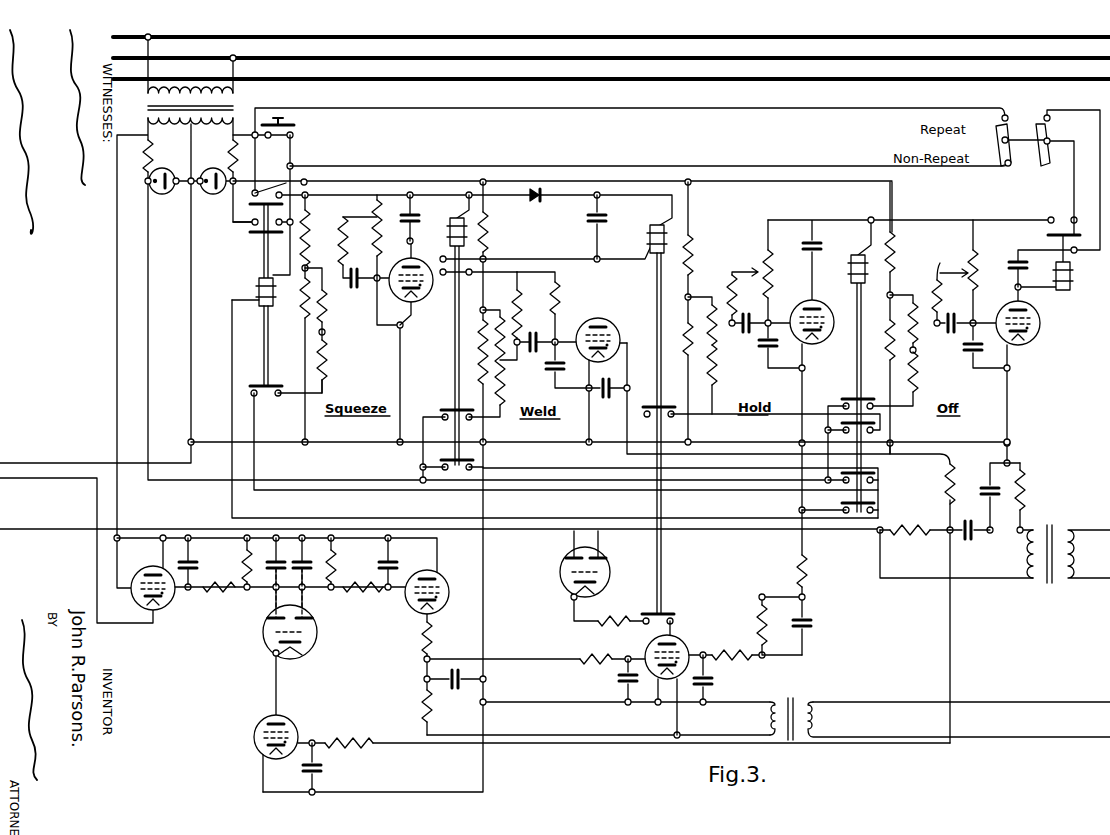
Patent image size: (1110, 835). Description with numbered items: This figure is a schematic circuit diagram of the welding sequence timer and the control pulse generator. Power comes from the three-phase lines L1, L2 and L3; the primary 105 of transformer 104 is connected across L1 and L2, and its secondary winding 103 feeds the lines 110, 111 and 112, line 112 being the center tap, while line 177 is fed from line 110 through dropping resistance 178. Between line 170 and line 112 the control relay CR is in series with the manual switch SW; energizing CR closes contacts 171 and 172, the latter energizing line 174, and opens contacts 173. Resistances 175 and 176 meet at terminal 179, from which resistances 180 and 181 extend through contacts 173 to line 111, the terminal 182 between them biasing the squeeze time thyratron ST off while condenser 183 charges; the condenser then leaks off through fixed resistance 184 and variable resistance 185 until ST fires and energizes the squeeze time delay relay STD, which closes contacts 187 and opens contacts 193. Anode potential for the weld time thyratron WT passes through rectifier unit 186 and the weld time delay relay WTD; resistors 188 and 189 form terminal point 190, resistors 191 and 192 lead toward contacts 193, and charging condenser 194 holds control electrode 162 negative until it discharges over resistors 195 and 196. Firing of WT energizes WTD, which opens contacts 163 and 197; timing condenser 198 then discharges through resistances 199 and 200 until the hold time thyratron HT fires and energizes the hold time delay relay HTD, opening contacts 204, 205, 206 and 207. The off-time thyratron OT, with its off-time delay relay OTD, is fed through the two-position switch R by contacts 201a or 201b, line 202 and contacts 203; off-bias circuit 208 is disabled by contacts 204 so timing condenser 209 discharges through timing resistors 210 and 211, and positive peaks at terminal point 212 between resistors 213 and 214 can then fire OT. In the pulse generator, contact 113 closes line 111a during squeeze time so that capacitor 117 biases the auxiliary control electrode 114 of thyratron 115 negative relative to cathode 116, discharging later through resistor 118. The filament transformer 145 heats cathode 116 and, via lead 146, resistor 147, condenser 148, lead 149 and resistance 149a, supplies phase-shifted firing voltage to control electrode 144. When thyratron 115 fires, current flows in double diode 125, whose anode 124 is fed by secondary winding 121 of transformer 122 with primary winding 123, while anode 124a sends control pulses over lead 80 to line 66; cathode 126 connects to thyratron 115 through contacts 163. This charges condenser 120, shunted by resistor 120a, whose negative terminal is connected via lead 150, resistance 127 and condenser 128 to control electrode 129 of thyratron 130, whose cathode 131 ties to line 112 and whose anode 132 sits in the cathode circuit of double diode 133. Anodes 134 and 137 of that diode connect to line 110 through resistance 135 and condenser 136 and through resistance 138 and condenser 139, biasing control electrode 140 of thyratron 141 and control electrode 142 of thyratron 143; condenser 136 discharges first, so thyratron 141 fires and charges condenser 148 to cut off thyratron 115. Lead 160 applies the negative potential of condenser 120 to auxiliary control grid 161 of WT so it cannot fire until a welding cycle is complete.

The power line L1 is at (135, 36).
The power line L2 is at (141, 57).
The power line L3 is at (141, 78).
The transformer 104 is at (272, 101).
The primary 105 is at (148, 94).
The secondary winding 103 is at (148, 120).
The dropping resistance 178 is at (230, 152).
The line 110 is at (337, 114).
The manually operable switch SW is at (328, 137).
The line 174 is at (768, 168).
The normally open contacts 171 is at (288, 183).
The line 170 is at (562, 188).
The normally open contacts 172 is at (262, 244).
The control relay CR is at (250, 286).
The normally closed contacts 173 is at (292, 374).
The resistance 175 is at (304, 221).
The fixed resistance 184 is at (326, 233).
The terminal 179 is at (320, 345).
The resistance 176 is at (302, 318).
The resistance 180 is at (338, 322).
The terminal 182 is at (329, 338).
The resistance 181 is at (329, 364).
The condenser 183 is at (363, 252).
The variable resistance 185 is at (377, 318).
The squeeze time thyratron ST is at (447, 326).
The normally open contacts 187 is at (426, 292).
The squeeze time delay relay STD is at (462, 218).
The normally closed contacts 193 is at (440, 410).
The normally closed contact 113 is at (480, 465).
The line 111 is at (398, 478).
The line 111a is at (586, 470).
The resistor 188 is at (486, 232).
The rectifier unit 186 is at (548, 205).
The weld time delay relay WTD is at (645, 217).
The normally closed contacts 197 is at (645, 416).
The resistance 199 is at (703, 312).
The line 177 is at (734, 182).
The variable resistance 200 is at (765, 279).
The timing condenser 198 is at (766, 341).
The hold time delay relay HTD is at (866, 244).
The hold time thyratron HT is at (821, 400).
The resistor 214 is at (892, 270).
The resistor 213 is at (885, 336).
The terminal point 212 is at (908, 315).
The off-bias circuit 208 is at (975, 392).
The normally closed contacts 204 is at (844, 398).
The normally closed contacts 205 is at (881, 427).
The normally closed contacts 206 is at (872, 482).
The normally closed contacts 207 is at (872, 507).
The timing resistor 211 is at (975, 282).
The timing resistor 210 is at (964, 290).
The timing condenser 209 is at (958, 355).
The off-time thyratron OT is at (1026, 375).
The off-time delay relay OTD is at (1100, 320).
The normally closed contacts 203 is at (1040, 239).
The line 202 is at (1073, 199).
The manual two-position switch R is at (1028, 156).
The contacts 201a is at (1025, 109).
The contacts 201b is at (1010, 164).
The line 112 is at (191, 432).
The resistor 189 is at (460, 370).
The resistor 191 is at (472, 334).
The resistor 192 is at (504, 382).
The charging condenser 194 is at (525, 316).
The resistor 196 is at (558, 289).
The resistor 195 is at (545, 313).
The terminal point 190 is at (484, 307).
The weld time thyratron WT is at (582, 326).
The auxiliary control grid 161 is at (616, 334).
The control electrode 162 is at (602, 369).
The lead 160 is at (933, 603).
The condenser 120 is at (976, 478).
The resistor 120a is at (1025, 496).
The lead 80 is at (24, 528).
The line 66 is at (26, 463).
The resistance 127 is at (910, 537).
The condenser 128 is at (970, 537).
The transformer 122 is at (1060, 600).
The secondary winding 121 is at (1014, 554).
The primary winding 123 is at (1089, 554).
The lead 150 is at (955, 616).
The thyratron 143 is at (138, 600).
The control electrode 142 is at (170, 593).
The condenser 139 is at (232, 593).
The resistance 138 is at (246, 562).
The anode 134 is at (312, 622).
The anode 137 is at (264, 623).
The double diode 133 is at (312, 641).
The resistance 135 is at (332, 565).
The condenser 136 is at (312, 590).
The control electrode 140 is at (412, 593).
The thyratron 141 is at (434, 618).
The resistor 147 is at (420, 698).
The condenser 148 is at (456, 684).
The lead 149 is at (533, 663).
The resistance 149a is at (586, 648).
The lead 146 is at (600, 736).
The thyratron 130 is at (264, 724).
The anode 132 is at (292, 723).
The cathode 131 is at (263, 747).
The control electrode 129 is at (306, 740).
The anode 124 is at (605, 552).
The anode 124a is at (566, 560).
The double diode 125 is at (609, 570).
The cathode 126 is at (606, 589).
The contacts 163 is at (668, 614).
The control electrode 144 is at (642, 654).
The thyratron 115 is at (674, 639).
The auxiliary control electrode 114 is at (699, 649).
The cathode 116 is at (686, 700).
The resistor 118 is at (758, 606).
The capacitor 117 is at (806, 618).
The filament transformer 145 is at (813, 693).